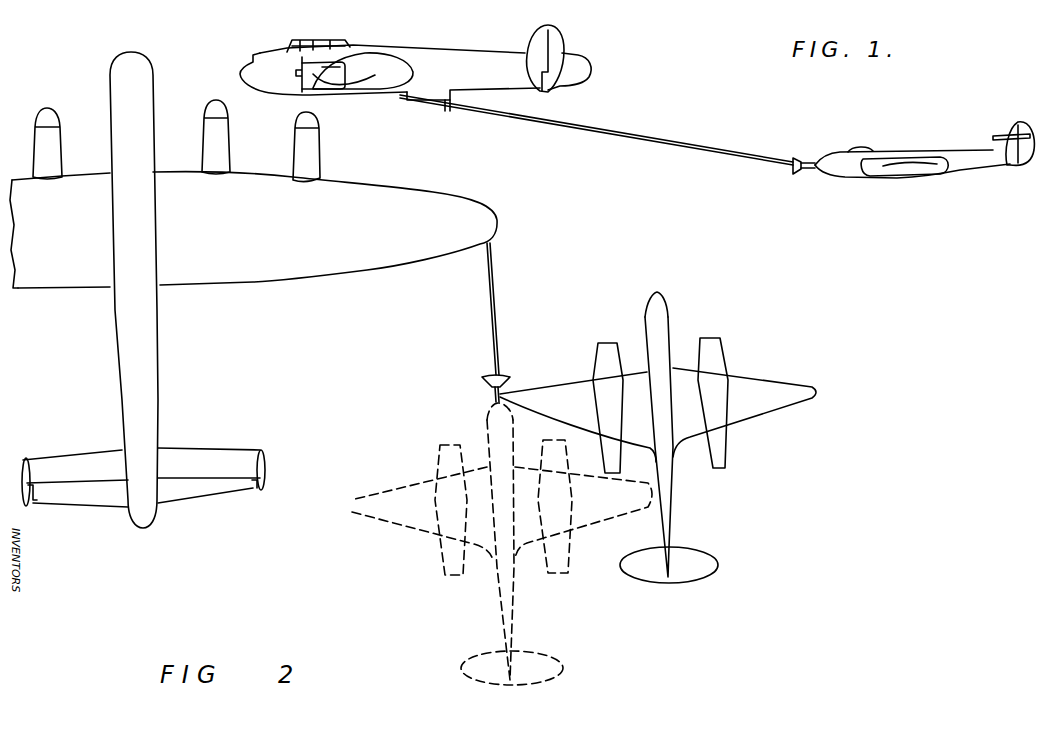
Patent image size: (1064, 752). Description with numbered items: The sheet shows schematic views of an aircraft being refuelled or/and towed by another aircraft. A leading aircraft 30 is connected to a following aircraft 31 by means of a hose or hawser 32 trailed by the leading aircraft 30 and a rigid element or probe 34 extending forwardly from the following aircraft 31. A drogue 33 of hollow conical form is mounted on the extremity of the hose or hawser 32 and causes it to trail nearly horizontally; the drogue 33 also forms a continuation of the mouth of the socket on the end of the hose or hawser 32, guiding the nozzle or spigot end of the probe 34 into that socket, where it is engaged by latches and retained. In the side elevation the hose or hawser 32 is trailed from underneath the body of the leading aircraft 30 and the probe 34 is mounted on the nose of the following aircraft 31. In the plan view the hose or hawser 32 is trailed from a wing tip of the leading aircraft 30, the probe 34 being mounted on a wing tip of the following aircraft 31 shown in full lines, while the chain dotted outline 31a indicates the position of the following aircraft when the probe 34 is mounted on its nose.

In FIG. 1, the leading aircraft 30 is at (570, 90).
In FIG. 2, the leading aircraft 30 is at (115, 352).
In FIG. 1, the following aircraft 31 is at (888, 140).
In FIG. 2, the following aircraft 31 is at (733, 351).
In FIG. 2, the chain dotted outline of following aircraft 31a is at (499, 623).
In FIG. 1, the hose or hawser 32 is at (614, 131).
In FIG. 2, the hose or hawser 32 is at (496, 350).
In FIG. 1, the drogue 33 is at (791, 159).
In FIG. 2, the drogue 33 is at (490, 376).
In FIG. 1, the probe 34 is at (809, 161).
In FIG. 2, the probe 34 is at (494, 393).